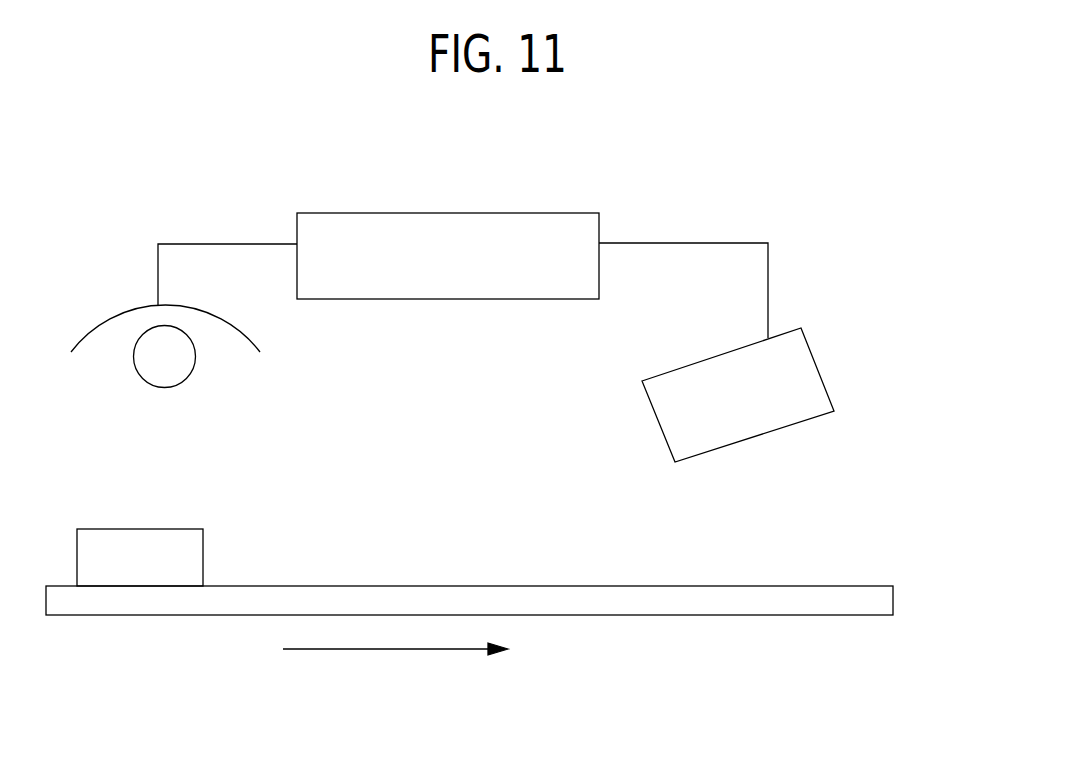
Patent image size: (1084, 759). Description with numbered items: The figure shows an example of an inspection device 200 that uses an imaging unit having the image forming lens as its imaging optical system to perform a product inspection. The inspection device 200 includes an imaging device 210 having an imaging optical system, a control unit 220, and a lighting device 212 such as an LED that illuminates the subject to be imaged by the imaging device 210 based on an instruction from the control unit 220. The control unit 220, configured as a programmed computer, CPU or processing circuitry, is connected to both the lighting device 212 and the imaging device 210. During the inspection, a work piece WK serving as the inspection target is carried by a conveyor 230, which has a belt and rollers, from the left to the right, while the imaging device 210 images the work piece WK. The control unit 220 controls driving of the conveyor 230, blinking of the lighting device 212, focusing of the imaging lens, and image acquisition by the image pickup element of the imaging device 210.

The inspection device 200 is at (702, 207).
The imaging device 210 is at (815, 358).
The lighting device 212 is at (139, 376).
The control unit 220 is at (536, 299).
The conveyor 230 is at (408, 586).
The work piece WK is at (138, 529).